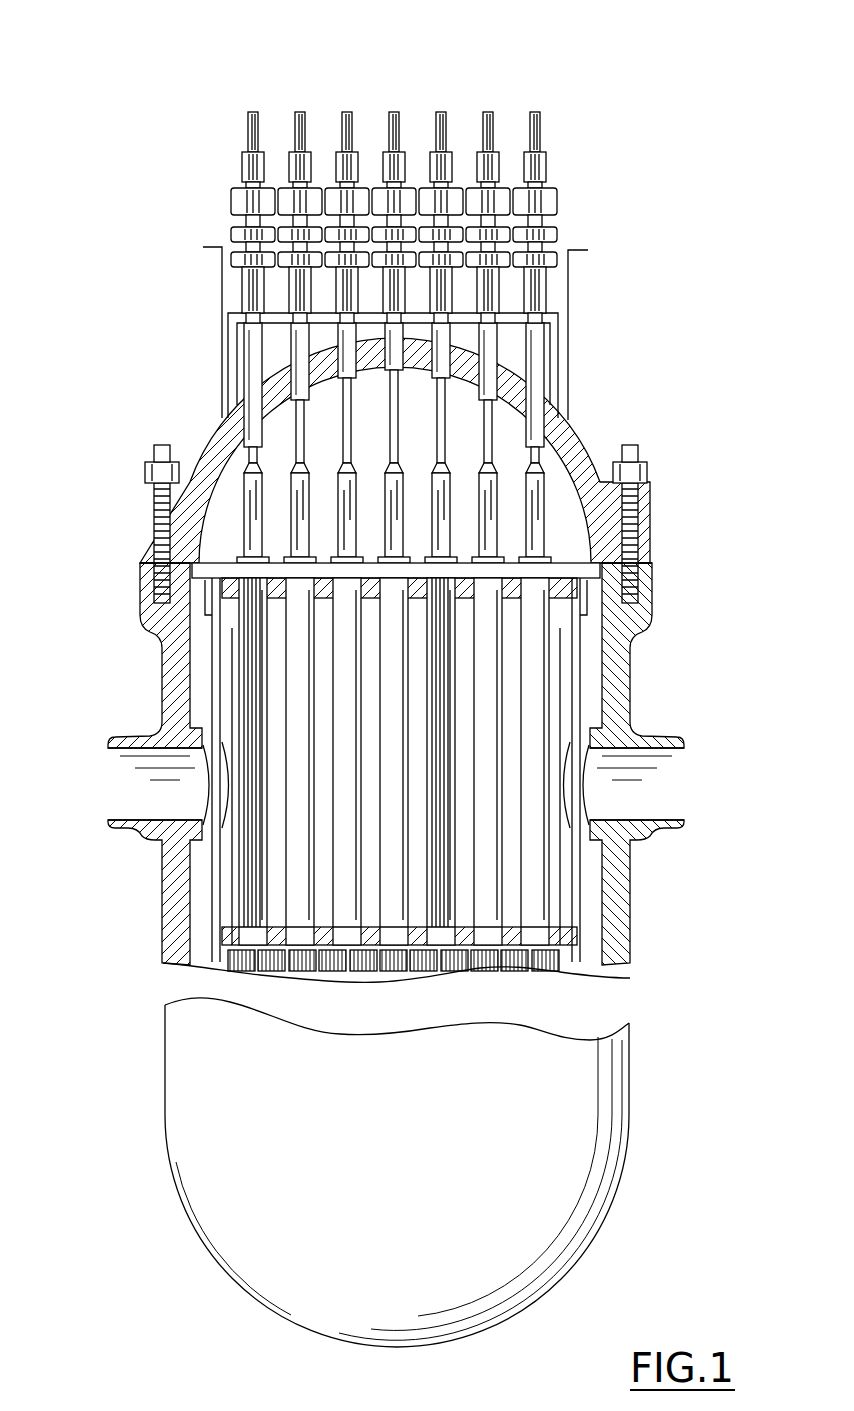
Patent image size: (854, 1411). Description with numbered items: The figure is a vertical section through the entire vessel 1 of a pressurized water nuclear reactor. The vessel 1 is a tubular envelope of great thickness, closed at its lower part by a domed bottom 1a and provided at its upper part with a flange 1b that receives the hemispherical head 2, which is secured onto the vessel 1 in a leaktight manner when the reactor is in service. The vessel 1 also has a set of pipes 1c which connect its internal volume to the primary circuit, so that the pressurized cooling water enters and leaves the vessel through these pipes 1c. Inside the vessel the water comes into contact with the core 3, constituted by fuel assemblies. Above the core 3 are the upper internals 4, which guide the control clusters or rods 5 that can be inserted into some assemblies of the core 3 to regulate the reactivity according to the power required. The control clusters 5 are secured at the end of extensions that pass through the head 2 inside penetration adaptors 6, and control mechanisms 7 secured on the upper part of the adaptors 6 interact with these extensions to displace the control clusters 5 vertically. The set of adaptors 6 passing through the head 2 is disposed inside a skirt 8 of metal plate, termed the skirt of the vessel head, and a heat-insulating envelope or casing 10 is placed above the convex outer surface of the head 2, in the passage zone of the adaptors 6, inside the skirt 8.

The vessel 1 is at (617, 935).
The domed bottom 1a is at (533, 1192).
The flange 1b is at (652, 621).
The pipes 1c is at (155, 733).
The hemispherical head 2 is at (580, 447).
The core 3 is at (522, 974).
The upper internals 4 is at (498, 752).
The control clusters 5 is at (440, 820).
The penetration adaptors 6 is at (347, 358).
The control mechanisms 7 is at (483, 152).
The skirt 8 is at (568, 280).
The heat-insulating envelope 10 is at (568, 352).